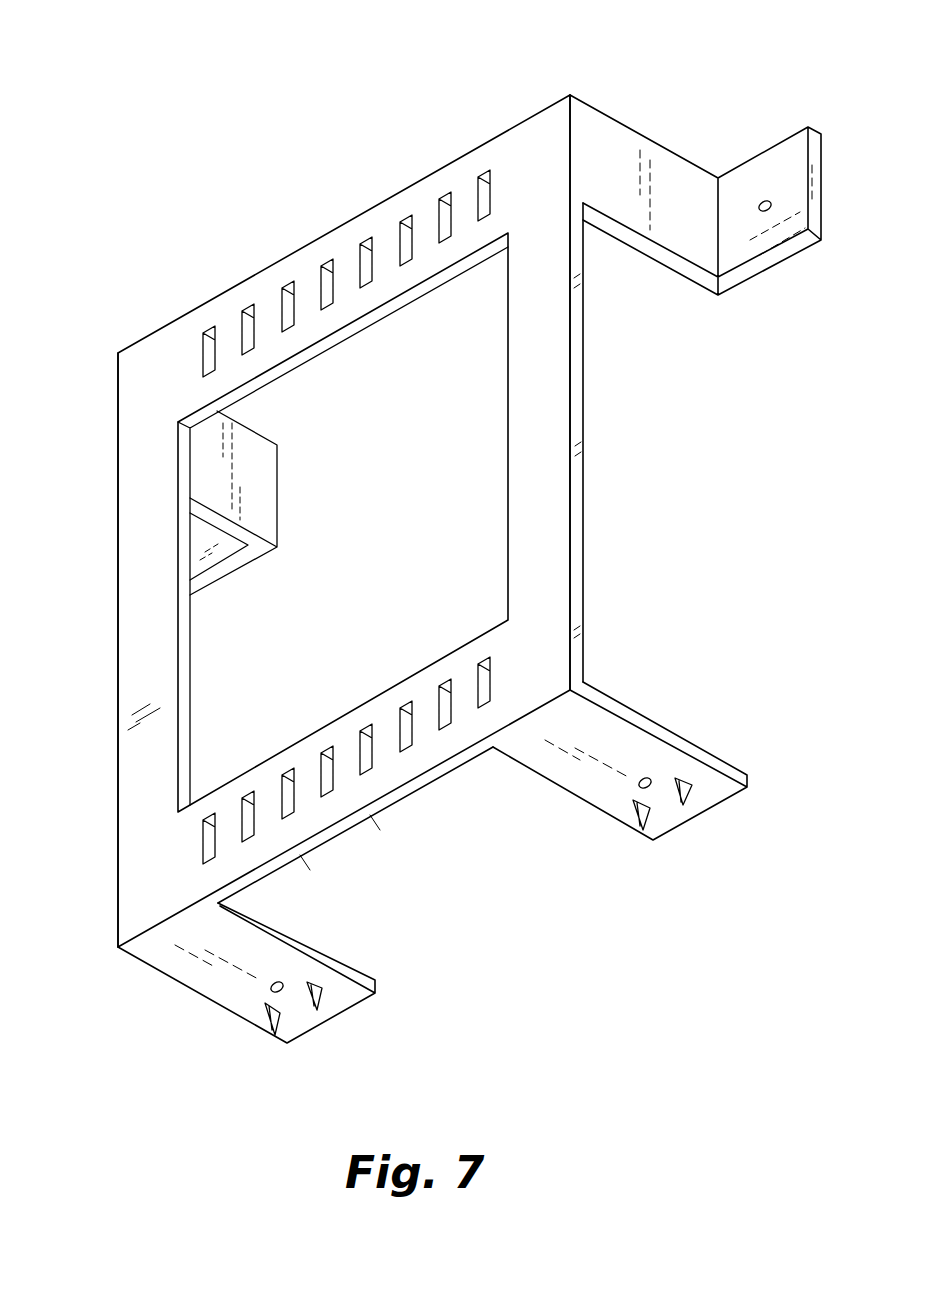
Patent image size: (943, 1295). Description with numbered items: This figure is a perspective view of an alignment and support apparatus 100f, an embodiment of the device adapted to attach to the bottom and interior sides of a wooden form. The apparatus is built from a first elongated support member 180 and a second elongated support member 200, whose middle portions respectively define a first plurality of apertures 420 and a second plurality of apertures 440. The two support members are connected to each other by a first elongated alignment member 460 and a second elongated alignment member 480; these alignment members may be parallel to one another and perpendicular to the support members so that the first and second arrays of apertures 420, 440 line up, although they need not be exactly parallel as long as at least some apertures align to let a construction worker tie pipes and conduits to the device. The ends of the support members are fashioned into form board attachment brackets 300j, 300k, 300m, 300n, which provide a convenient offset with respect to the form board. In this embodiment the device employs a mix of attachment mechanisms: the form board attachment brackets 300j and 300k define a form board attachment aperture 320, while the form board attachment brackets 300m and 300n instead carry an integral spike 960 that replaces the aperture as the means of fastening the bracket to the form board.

The alignment and support apparatus 100f is at (125, 76).
The first plurality of apertures 420 is at (327, 283).
The second plurality of apertures 440 is at (368, 743).
The first elongated support member 180 is at (343, 522).
The form board attachment bracket 300j is at (262, 490).
The form board attachment bracket 300k is at (753, 266).
The form board attachment bracket 300m is at (384, 992).
The form board attachment bracket 300n is at (647, 748).
The form board attachment aperture 320 is at (762, 203).
The first elongated alignment member 460 is at (152, 655).
The second elongated alignment member 480 is at (552, 408).
The second elongated support member 200 is at (350, 806).
The integral spike 960 is at (280, 1018).